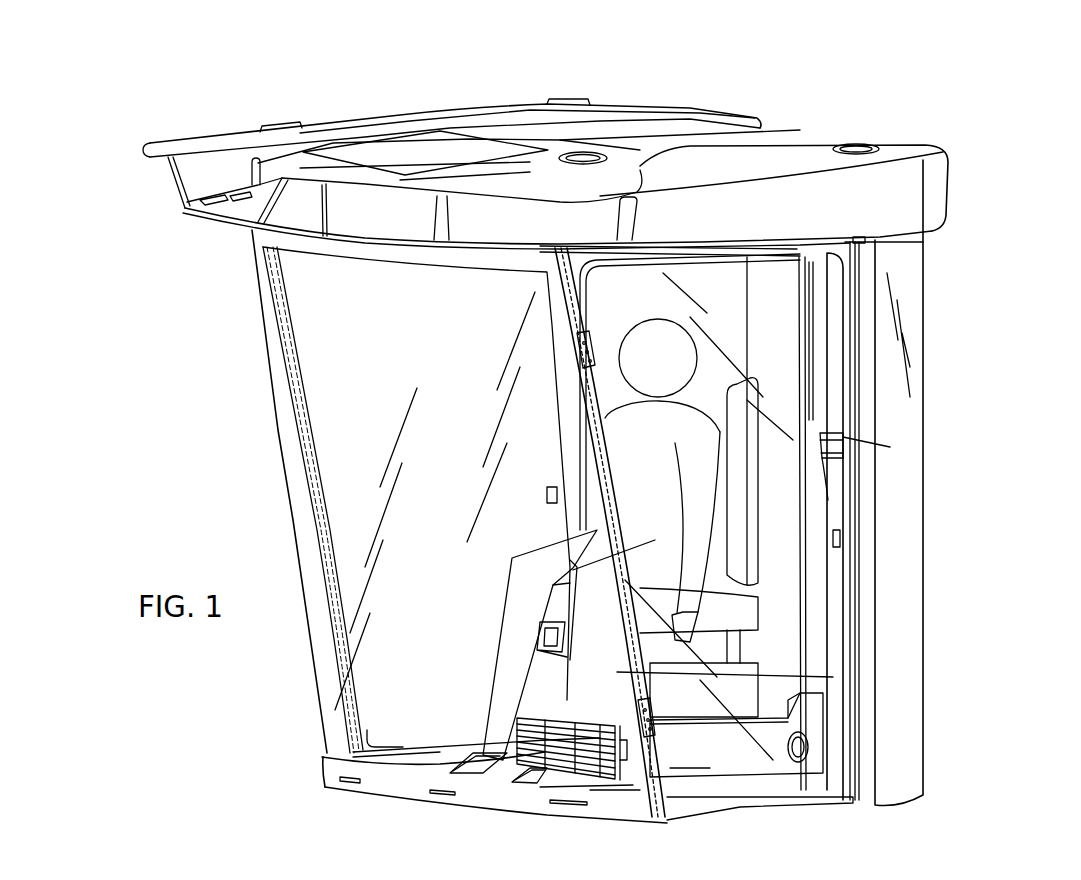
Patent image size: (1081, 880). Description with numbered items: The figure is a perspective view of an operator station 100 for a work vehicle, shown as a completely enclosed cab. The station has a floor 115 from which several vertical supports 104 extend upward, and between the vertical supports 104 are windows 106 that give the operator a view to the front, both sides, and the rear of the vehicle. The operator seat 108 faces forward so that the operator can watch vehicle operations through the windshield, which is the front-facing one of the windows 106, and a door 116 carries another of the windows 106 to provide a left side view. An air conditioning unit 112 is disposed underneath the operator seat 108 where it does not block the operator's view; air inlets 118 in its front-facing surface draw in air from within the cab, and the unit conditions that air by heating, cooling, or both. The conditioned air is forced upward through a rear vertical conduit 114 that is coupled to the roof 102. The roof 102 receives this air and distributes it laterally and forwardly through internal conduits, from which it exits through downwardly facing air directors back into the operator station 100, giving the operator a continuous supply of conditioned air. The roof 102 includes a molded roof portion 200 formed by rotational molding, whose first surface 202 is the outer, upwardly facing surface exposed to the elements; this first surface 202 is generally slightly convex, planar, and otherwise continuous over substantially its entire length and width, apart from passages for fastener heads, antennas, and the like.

The operator station 100 is at (981, 91).
The roof 102 is at (771, 166).
The vertical supports 104 is at (287, 422).
The windows 106 is at (353, 340).
The operator seat 108 is at (744, 556).
The air conditioning unit 112 is at (690, 752).
The rear vertical conduit 114 is at (820, 484).
The floor 115 is at (423, 768).
The door 116 is at (782, 602).
The air inlets 118 is at (587, 762).
The molded roof portion 200 is at (452, 110).
The first surface 202 is at (432, 143).